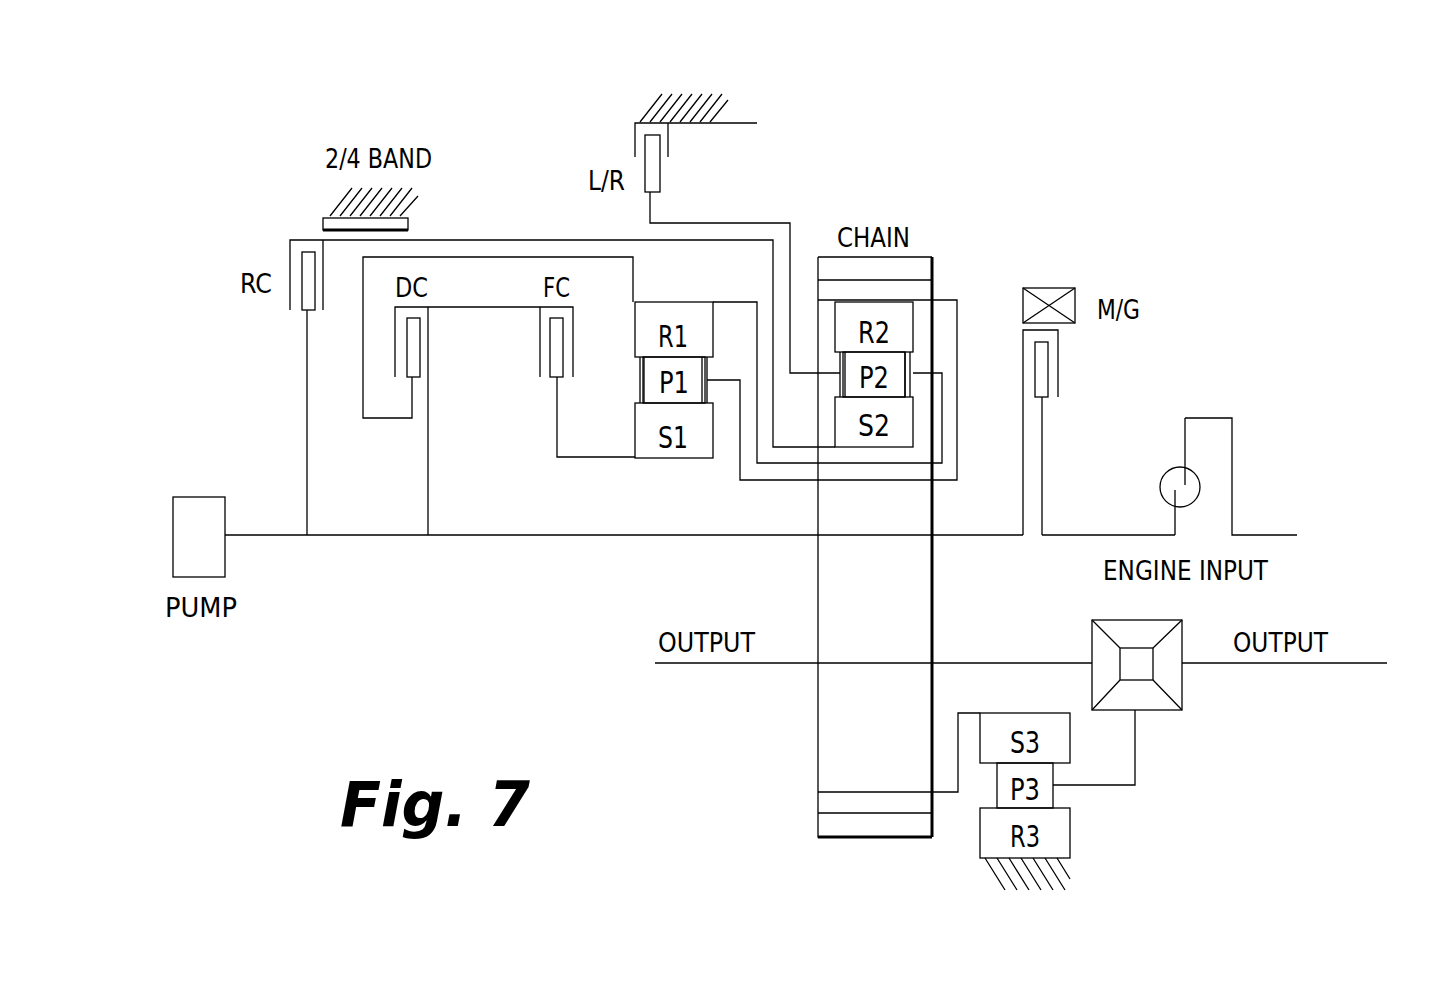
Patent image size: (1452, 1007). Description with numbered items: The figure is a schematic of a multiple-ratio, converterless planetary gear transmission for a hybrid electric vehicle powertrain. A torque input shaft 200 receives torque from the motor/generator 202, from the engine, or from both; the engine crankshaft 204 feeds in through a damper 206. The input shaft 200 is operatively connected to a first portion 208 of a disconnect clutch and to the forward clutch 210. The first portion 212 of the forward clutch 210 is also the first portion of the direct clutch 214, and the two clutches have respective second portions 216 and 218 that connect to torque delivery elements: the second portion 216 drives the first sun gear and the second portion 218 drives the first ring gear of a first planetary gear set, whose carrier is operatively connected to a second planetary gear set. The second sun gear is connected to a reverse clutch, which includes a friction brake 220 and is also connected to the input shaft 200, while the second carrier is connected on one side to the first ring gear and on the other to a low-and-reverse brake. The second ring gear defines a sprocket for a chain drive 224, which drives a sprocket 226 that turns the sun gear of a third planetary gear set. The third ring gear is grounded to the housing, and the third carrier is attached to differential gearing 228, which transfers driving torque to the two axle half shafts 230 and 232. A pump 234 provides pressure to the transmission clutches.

The torque input shaft 200 is at (735, 536).
The M/G 202 is at (1065, 288).
The engine crankshaft 204 is at (1270, 535).
The damper 206 is at (1160, 487).
The first portion of disconnect clutch 208 is at (1023, 355).
The forward clutch 210 is at (534, 361).
The first portion of the forward clutch 212 is at (520, 309).
The direct clutch 214 is at (434, 361).
The second portion of the forward clutch 216 is at (557, 392).
The second portion of the direct clutch 218 is at (363, 405).
The friction brake 220 is at (420, 222).
The chain drive 224 is at (806, 752).
The sprocket 226 is at (813, 805).
The differential gearing 228 is at (1196, 692).
The axle half shaft 230 is at (1352, 665).
The axle half shaft 232 is at (725, 665).
The pump 234 is at (173, 525).